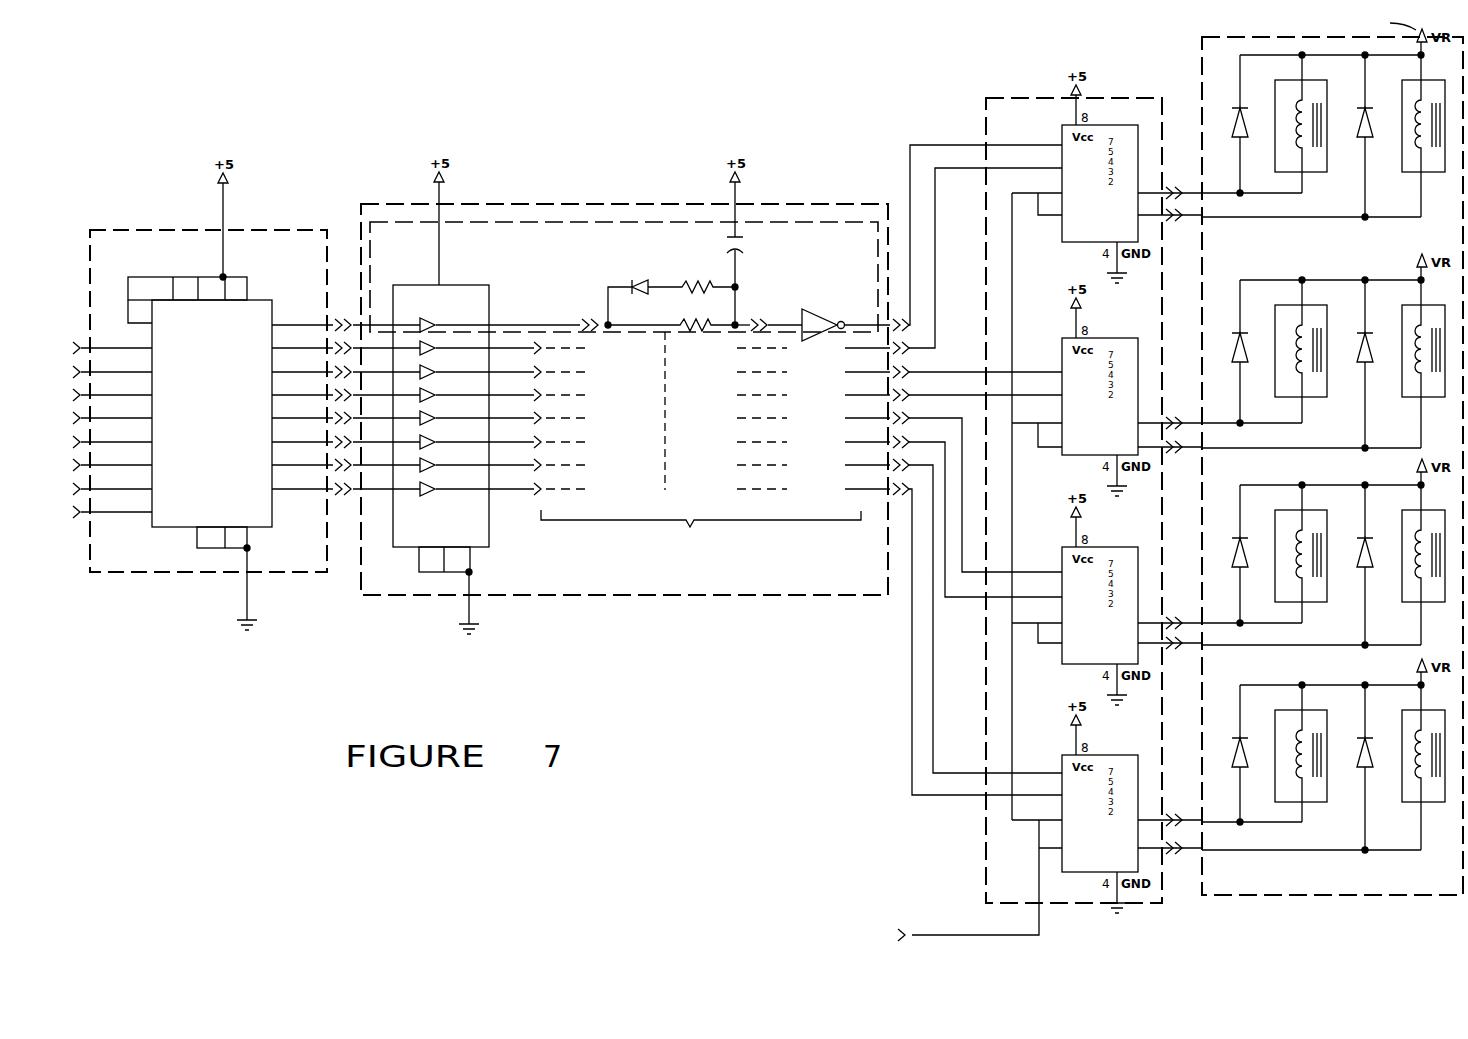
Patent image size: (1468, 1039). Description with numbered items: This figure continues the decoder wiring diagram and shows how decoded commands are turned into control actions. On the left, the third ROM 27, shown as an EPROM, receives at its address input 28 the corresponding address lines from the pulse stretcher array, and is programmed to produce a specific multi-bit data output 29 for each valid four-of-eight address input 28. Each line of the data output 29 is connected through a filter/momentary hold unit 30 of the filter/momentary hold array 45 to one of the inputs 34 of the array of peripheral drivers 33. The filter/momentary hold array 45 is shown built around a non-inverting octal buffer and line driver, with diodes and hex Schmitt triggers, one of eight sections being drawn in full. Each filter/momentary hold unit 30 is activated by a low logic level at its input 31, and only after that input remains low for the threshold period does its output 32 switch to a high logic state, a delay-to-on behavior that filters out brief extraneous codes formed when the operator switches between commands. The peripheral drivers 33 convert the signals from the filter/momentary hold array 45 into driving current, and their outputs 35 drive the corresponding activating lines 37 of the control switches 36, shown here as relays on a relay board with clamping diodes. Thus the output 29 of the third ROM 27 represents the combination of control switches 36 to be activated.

The third ROM 27 is at (200, 575).
The address input 28 is at (88, 519).
The data output 29 is at (323, 500).
The filter/momentary hold unit 30 is at (502, 221).
The input 31 is at (390, 505).
The output 32 is at (884, 506).
The peripheral drivers 33 is at (1020, 97).
The inputs 34 is at (907, 298).
The outputs 35 is at (1174, 186).
The control switches 36 is at (1315, 481).
The activating lines 37 is at (1200, 859).
The filter/momentary hold array 45 is at (600, 595).